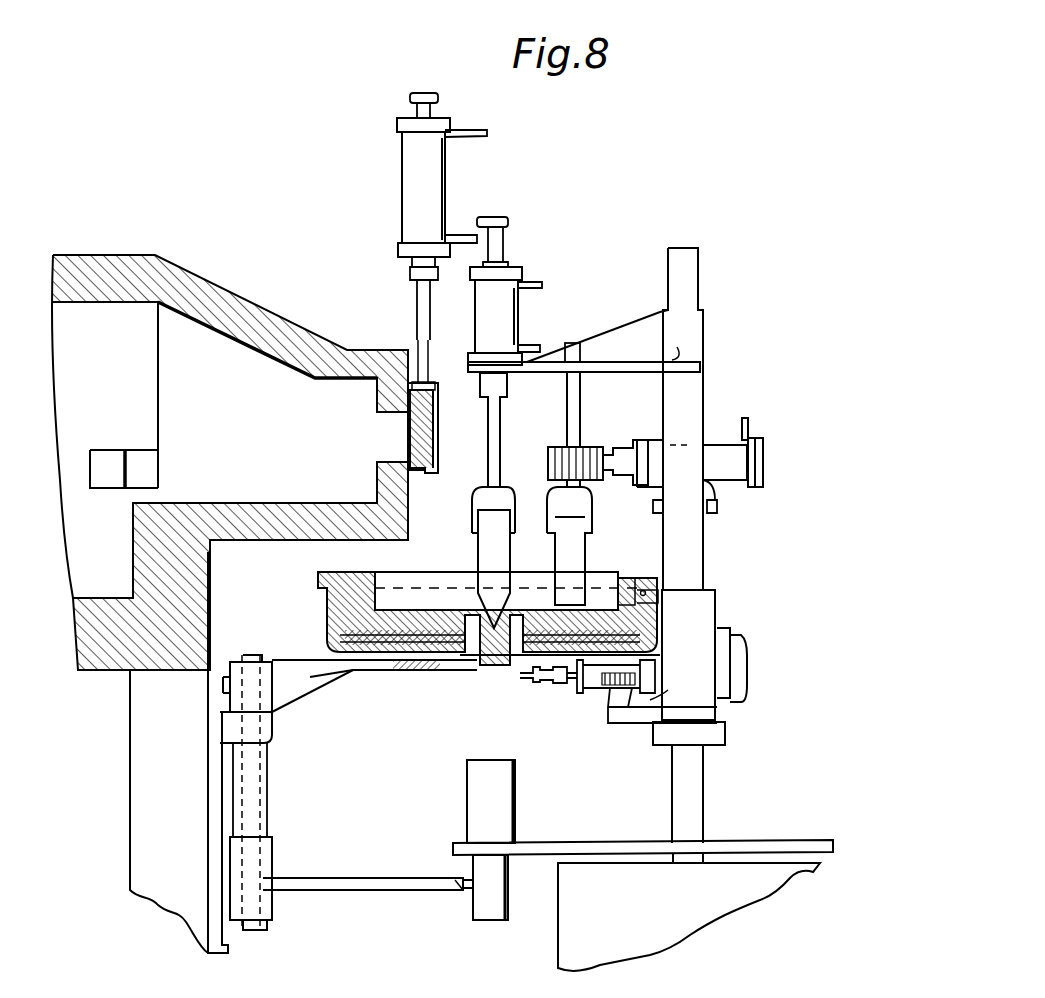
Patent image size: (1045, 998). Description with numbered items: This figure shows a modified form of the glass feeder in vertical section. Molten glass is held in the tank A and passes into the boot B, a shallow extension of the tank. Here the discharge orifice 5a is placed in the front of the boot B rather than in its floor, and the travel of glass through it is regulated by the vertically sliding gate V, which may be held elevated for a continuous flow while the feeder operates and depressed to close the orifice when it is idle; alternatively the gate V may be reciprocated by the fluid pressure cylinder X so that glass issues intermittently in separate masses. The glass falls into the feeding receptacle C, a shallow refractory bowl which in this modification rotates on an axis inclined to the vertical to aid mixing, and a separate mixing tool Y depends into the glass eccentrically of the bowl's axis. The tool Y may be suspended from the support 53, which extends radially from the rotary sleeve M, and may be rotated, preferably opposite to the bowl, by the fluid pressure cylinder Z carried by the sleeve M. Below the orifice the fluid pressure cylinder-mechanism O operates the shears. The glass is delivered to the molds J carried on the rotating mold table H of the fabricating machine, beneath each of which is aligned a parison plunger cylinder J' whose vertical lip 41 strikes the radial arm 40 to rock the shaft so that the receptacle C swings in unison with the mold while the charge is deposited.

The tank A is at (230, 604).
The boot B is at (160, 395).
The discharge orifice 5a is at (392, 445).
The vertically sliding gate V is at (435, 440).
The fluid pressure cylinder X is at (407, 188).
The support 53 is at (585, 419).
The fluid pressure cylinder Z is at (720, 447).
The sleeve M is at (699, 538).
The mixing tool Y is at (588, 548).
The feeding receptacle C is at (430, 577).
The fluid pressure cylinder-mechanism O is at (597, 695).
The molds J is at (502, 801).
The mold support or table H is at (643, 888).
The parison plunger cylinders J' is at (503, 887).
The radial arm 40 is at (395, 877).
The lip 41 is at (467, 893).